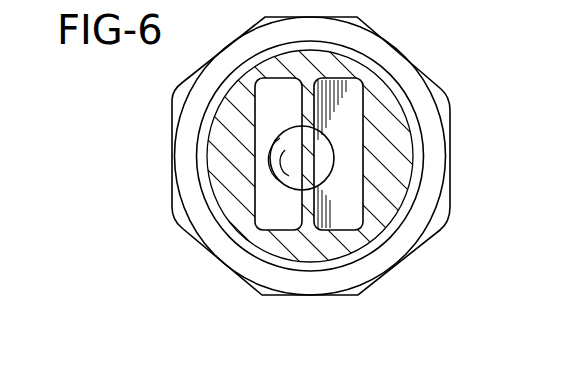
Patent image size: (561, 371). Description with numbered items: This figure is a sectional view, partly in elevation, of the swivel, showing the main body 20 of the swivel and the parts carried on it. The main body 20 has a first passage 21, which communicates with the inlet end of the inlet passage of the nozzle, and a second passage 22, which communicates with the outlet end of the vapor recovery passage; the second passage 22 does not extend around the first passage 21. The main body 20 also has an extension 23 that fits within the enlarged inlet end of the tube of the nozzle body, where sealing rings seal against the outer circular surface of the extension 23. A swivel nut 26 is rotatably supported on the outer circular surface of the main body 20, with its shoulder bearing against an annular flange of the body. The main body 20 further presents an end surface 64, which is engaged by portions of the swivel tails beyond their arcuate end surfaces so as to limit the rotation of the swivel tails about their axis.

The main body 20 is at (280, 185).
The first passage 21 is at (330, 155).
The second passage 22 is at (263, 212).
The extension 23 is at (281, 147).
The swivel nut 26 is at (172, 121).
The end surface 64 is at (423, 167).